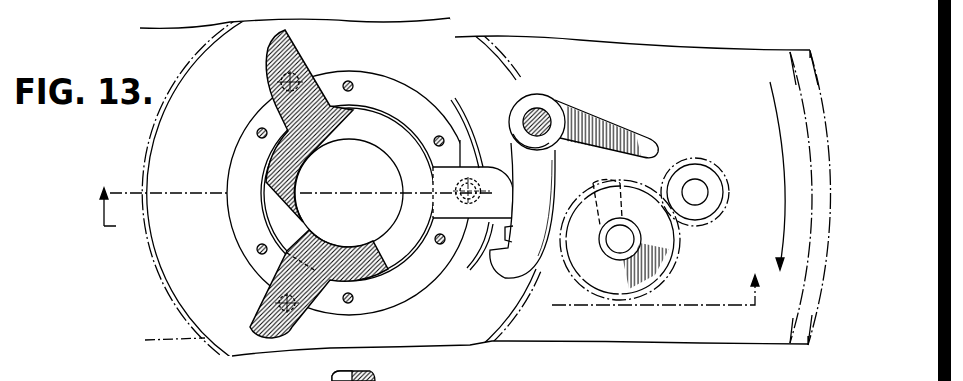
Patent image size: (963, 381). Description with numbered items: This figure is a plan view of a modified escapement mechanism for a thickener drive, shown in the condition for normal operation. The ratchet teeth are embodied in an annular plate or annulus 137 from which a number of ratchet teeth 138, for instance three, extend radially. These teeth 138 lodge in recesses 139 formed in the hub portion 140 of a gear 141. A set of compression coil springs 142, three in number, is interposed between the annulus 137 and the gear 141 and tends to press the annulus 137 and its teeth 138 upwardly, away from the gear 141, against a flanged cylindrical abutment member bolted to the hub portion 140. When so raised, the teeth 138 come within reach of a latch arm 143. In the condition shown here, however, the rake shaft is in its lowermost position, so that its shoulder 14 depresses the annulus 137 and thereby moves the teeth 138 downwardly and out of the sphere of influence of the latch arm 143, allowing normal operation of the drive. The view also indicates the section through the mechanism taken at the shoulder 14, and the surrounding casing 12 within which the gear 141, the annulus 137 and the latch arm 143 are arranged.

The tubular casing 12 is at (793, 348).
The shoulder 14 is at (427, 193).
The annulus 137 is at (393, 152).
The ratchet teeth 138 is at (301, 57).
The recesses 139 is at (262, 117).
The hub portion 140 is at (236, 157).
The gear 141 is at (152, 259).
The compression coil springs 142 is at (278, 82).
The latch arm 143 is at (507, 279).